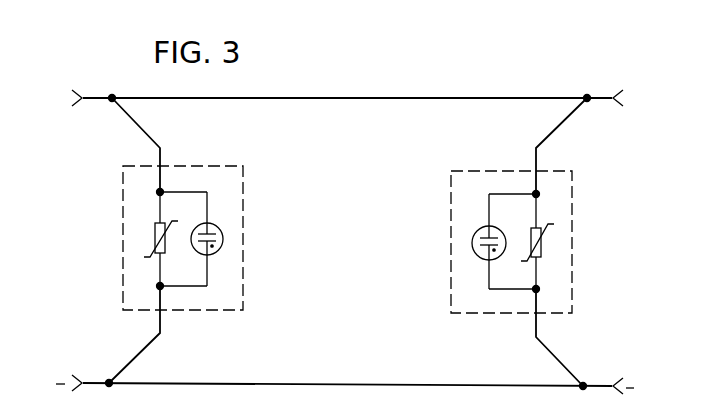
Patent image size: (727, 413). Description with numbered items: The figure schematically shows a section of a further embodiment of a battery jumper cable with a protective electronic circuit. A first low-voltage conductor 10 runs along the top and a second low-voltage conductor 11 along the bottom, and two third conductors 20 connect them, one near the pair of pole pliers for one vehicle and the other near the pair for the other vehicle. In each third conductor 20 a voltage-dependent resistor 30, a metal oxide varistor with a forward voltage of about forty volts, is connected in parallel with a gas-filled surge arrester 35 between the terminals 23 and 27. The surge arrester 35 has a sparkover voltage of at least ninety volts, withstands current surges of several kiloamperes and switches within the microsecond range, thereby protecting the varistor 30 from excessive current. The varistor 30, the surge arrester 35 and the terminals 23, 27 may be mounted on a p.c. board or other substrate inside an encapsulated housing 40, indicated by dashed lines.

The first low-voltage conductor 10 is at (386, 98).
The second low-voltage conductor 11 is at (305, 383).
The third conductor 20 is at (143, 127).
The terminal 23 is at (160, 192).
The terminal 27 is at (160, 286).
The voltage-dependent resistor 30 is at (155, 232).
The gas-filled surge arrester 35 is at (223, 241).
The encapsulated housing 40 is at (243, 177).